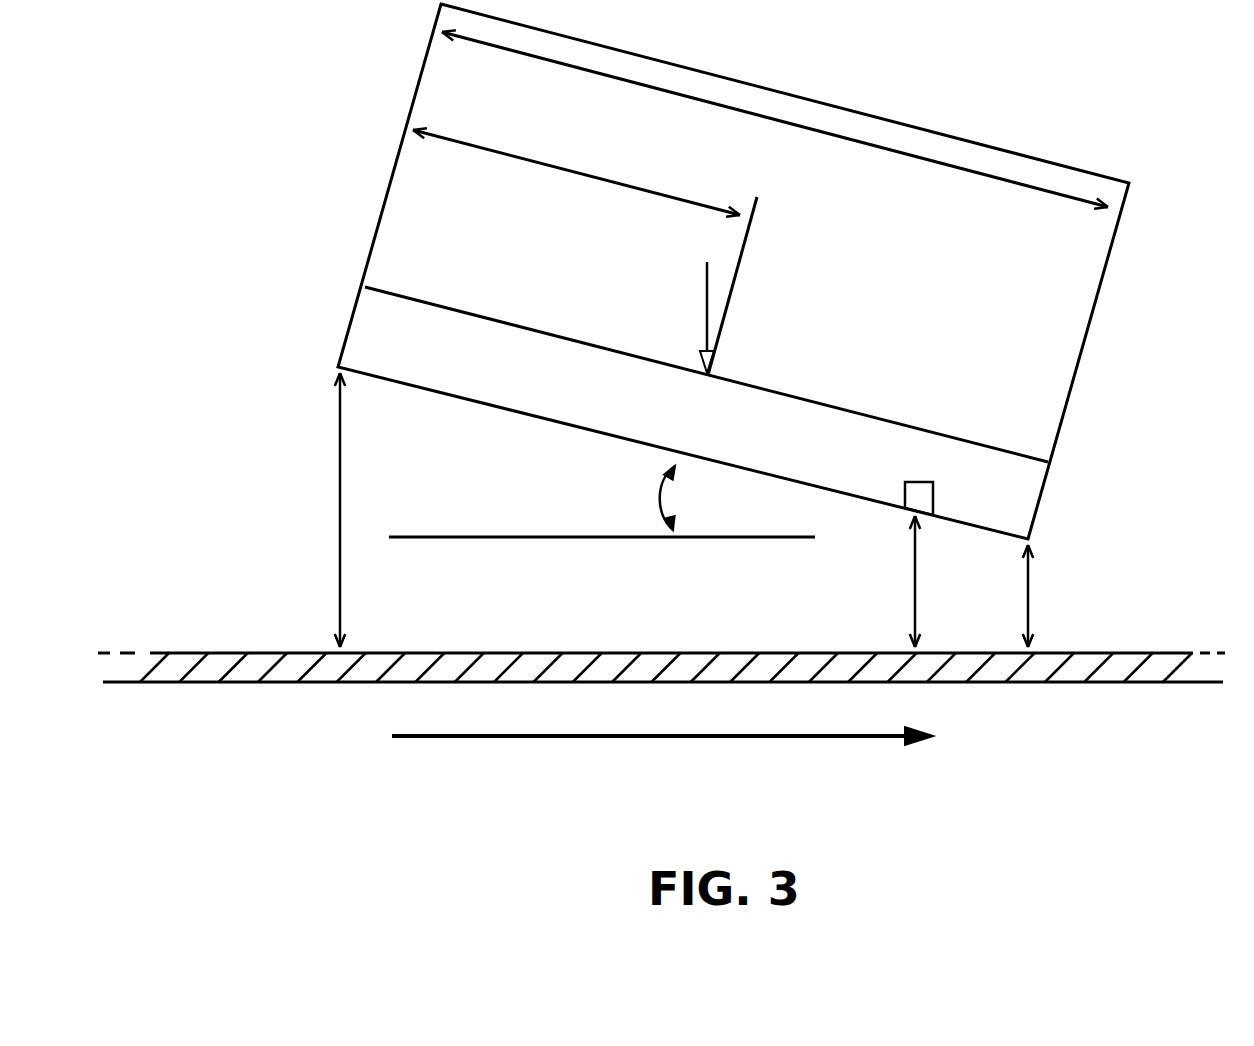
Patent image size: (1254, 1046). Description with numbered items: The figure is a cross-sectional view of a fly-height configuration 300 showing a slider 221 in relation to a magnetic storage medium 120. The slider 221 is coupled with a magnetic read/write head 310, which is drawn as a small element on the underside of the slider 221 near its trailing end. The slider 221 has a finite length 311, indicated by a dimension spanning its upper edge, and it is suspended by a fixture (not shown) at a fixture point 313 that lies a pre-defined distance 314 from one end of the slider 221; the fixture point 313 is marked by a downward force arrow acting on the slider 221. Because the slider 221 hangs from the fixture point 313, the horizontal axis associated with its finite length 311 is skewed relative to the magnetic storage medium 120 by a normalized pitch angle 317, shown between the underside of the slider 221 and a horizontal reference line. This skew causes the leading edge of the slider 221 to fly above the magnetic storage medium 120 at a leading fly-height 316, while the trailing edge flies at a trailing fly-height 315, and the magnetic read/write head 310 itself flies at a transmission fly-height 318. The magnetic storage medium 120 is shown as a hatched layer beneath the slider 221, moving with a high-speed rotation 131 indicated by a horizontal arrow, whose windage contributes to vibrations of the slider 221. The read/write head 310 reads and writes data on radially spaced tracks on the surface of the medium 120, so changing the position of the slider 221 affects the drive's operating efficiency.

The fly-height configuration 300 is at (242, 62).
The slider 221 is at (1040, 492).
The finite length 311 is at (960, 169).
The pre-defined distance 314 is at (467, 146).
The fixture point 313 is at (706, 325).
The fly-height 316 is at (338, 505).
The normalized pitch angle 317 is at (657, 499).
The magnetic read/write head 310 is at (912, 498).
The transmission fly-height 318 is at (914, 587).
The fly-height 315 is at (1030, 588).
The magnetic storage medium 120 is at (1097, 683).
The high-speed rotation 131 is at (696, 739).